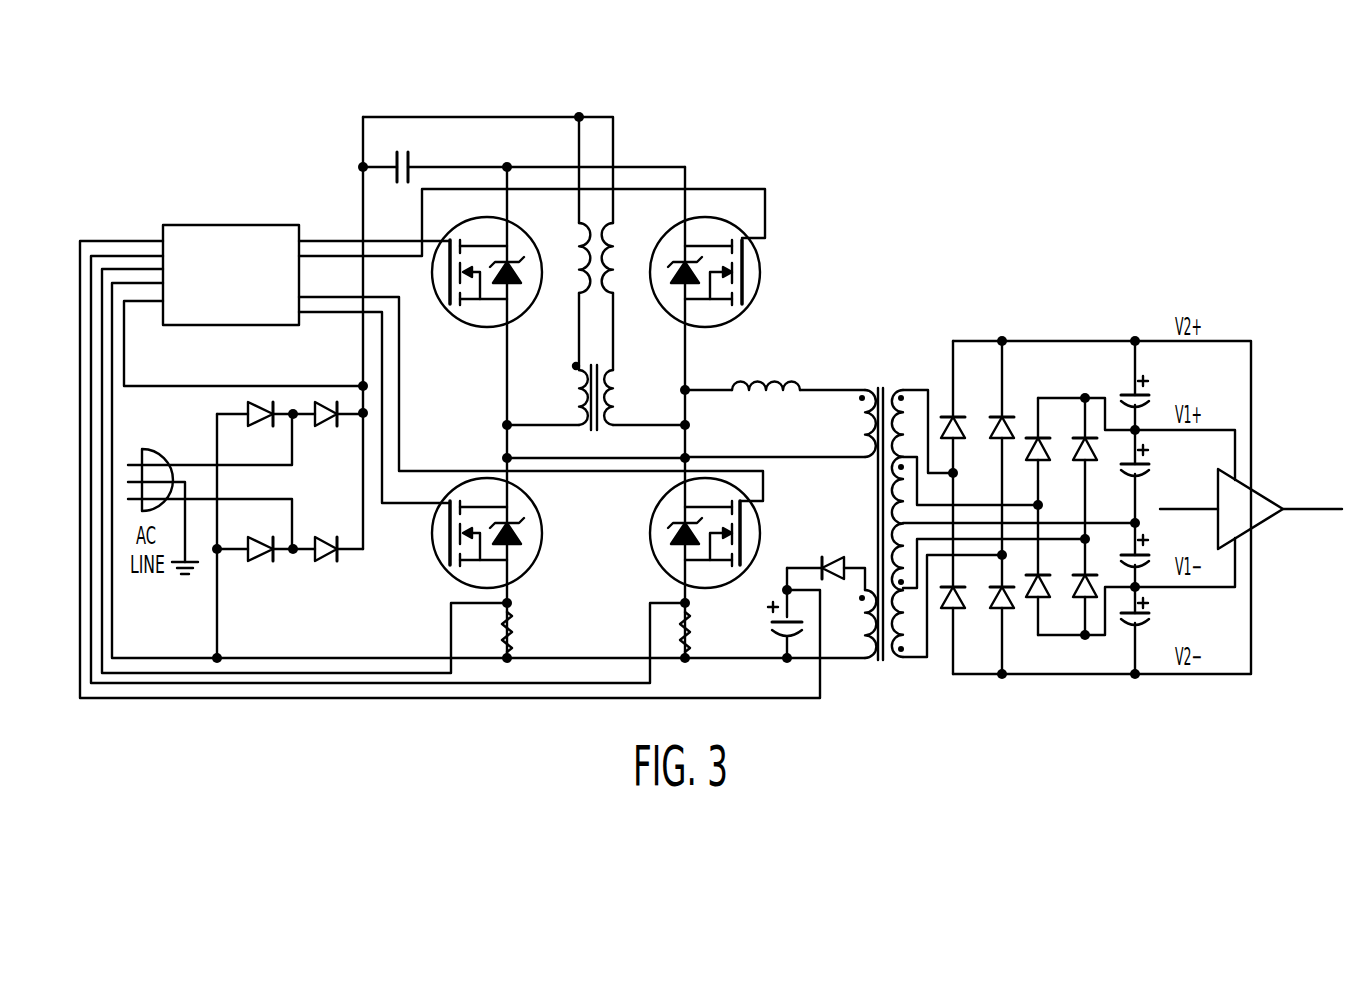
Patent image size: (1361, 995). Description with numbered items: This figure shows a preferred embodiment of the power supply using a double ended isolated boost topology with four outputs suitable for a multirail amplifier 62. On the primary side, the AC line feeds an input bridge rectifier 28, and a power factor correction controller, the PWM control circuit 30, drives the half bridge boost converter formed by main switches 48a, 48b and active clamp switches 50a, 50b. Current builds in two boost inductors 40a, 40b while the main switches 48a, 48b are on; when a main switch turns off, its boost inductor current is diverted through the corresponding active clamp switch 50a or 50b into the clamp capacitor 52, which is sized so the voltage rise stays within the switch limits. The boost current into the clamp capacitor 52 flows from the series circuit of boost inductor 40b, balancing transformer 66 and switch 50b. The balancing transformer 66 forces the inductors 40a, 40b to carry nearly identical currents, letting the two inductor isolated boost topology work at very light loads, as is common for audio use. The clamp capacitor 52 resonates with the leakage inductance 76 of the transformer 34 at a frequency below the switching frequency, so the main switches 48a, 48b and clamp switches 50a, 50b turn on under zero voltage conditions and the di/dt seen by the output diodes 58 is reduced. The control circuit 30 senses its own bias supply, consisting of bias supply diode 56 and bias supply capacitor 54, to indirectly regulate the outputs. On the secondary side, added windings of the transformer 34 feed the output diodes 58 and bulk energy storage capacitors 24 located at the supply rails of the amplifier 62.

The PWM control circuit 30 is at (162, 224).
The input bridge rectifier 28 is at (346, 490).
The clamp capacitor 52 is at (396, 178).
The boost inductor 40a is at (576, 235).
The boost inductor 40b is at (616, 235).
The active clamp switch 50a is at (459, 326).
The active clamp switch 50b is at (760, 268).
The main switch 48a is at (441, 566).
The main switch 48b is at (650, 560).
The balancing transformer 66 is at (578, 376).
The leakage inductance 76 is at (756, 384).
The transformer 34 is at (885, 388).
The bias supply diode 56 is at (837, 555).
The bias supply capacitor 54 is at (772, 623).
The output diodes 58 is at (992, 488).
The bulk energy storage capacitors 24 is at (1150, 395).
The multirail amplifier 62 is at (1262, 484).